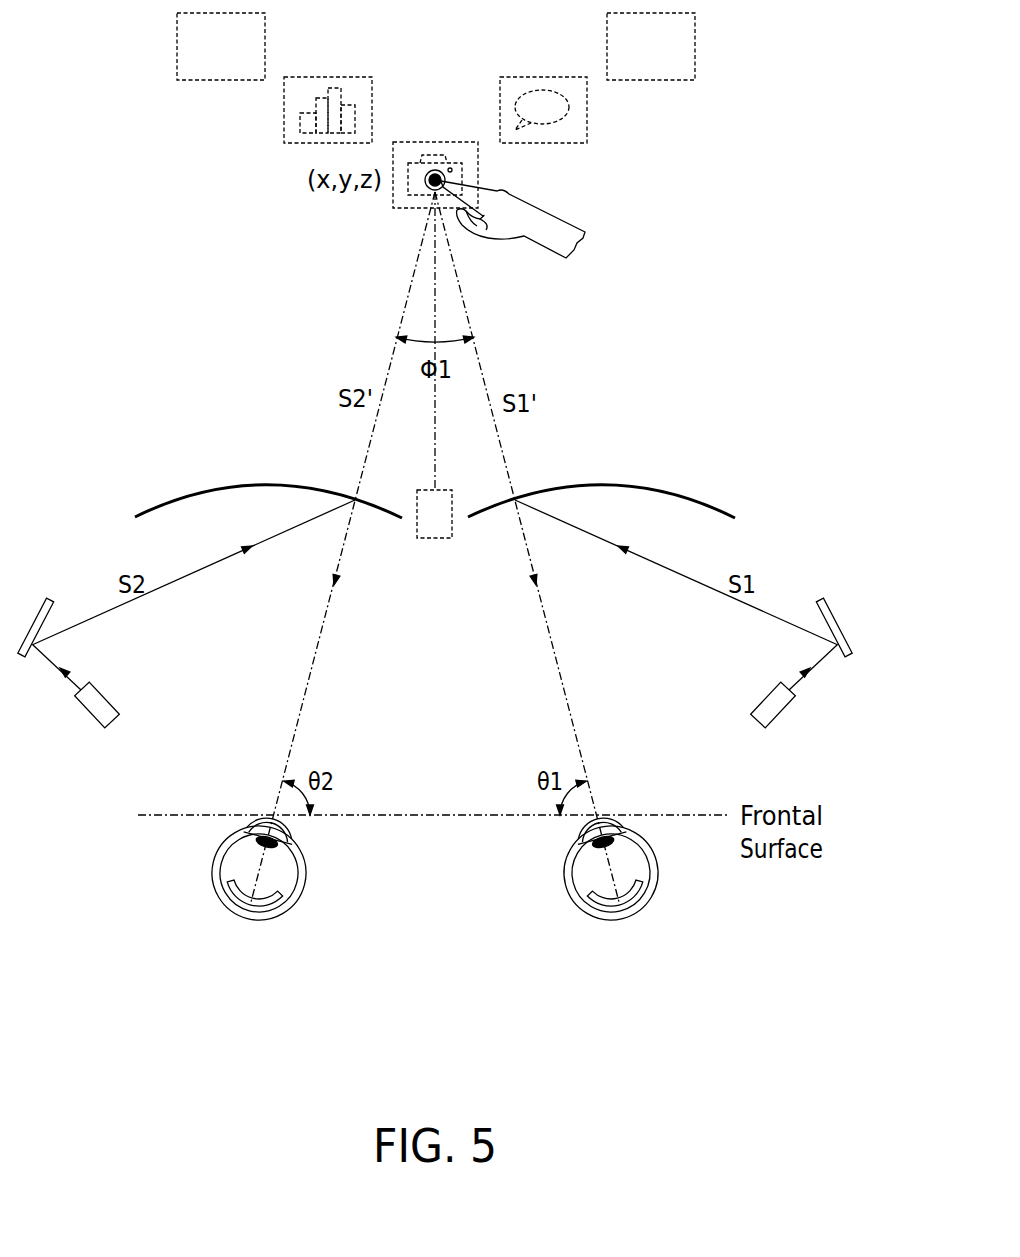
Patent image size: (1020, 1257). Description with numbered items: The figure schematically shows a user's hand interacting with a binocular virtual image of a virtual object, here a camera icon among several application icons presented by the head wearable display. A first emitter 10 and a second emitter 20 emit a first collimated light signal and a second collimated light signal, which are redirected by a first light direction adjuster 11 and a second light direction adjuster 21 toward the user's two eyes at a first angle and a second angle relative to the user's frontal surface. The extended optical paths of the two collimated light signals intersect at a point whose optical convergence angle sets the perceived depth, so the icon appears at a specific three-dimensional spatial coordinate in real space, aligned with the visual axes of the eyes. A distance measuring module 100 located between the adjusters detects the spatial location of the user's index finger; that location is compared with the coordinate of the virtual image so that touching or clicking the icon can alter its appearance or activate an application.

The first emitter 10 is at (785, 713).
The first light direction adjuster 11 is at (710, 505).
The second emitter 20 is at (88, 713).
The second light direction adjuster 21 is at (160, 505).
The distance measuring module 100 is at (452, 538).